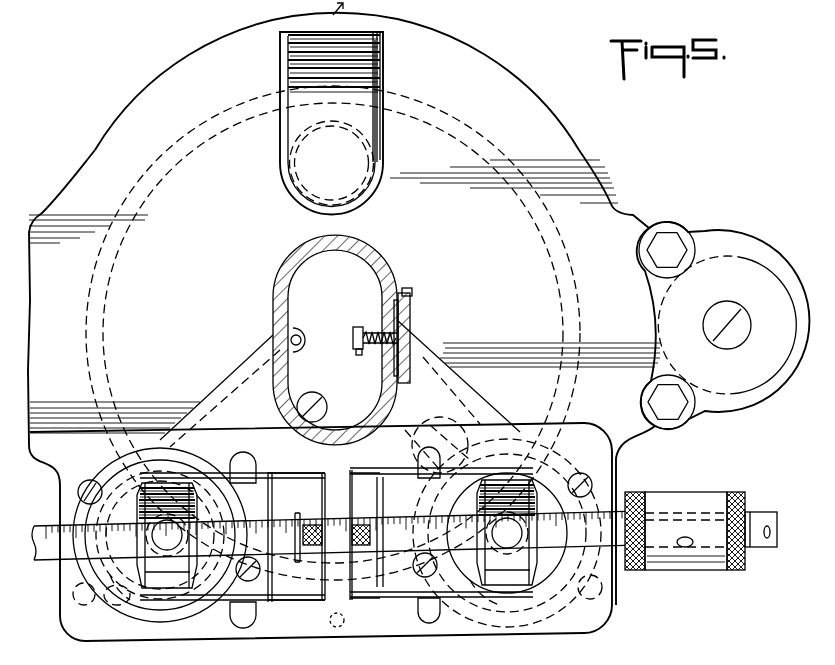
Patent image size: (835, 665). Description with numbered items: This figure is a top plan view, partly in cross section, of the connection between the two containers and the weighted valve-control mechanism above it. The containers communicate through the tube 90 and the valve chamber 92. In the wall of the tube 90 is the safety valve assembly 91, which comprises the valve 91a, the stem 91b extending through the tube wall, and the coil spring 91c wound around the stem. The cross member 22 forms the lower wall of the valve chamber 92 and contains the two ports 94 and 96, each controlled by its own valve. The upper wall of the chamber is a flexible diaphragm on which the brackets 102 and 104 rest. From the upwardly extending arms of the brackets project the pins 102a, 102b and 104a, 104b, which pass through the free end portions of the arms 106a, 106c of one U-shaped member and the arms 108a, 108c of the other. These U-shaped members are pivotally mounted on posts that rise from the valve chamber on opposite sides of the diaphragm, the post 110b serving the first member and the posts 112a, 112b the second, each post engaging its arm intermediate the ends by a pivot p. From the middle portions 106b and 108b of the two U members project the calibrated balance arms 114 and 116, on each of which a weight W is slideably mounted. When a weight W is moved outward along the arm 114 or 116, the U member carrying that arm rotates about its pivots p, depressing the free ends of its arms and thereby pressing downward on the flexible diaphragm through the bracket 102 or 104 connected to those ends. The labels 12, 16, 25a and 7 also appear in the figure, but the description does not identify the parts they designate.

The slot 12 is at (384, 70).
The cross member 22 is at (507, 82).
The section line 16 is at (138, 246).
The boss 25a is at (712, 250).
The tube 90 is at (377, 254).
The safety valve assembly 91 is at (411, 305).
The valve 91a is at (406, 289).
The stem 91b is at (380, 323).
The coil spring 91c is at (368, 352).
The valve chamber 92 is at (430, 366).
The port 96 is at (481, 370).
The port 94 is at (72, 583).
The calibrated balance arm 114 is at (56, 522).
The weight W is at (687, 491).
The calibrated balance arm 116 is at (760, 512).
The bracket 102 is at (154, 535).
The pin 102a is at (208, 470).
The pin 102b is at (132, 635).
The bracket 104 is at (527, 504).
The pin 104a is at (522, 445).
The pin 104b is at (522, 602).
The arm 106a is at (248, 462).
The middle portion 106b is at (303, 472).
The arm 106c is at (238, 622).
The arm 108a is at (481, 446).
The middle portion 108b is at (362, 470).
The arm 108c is at (472, 596).
The post 110b is at (252, 625).
The post 112a is at (436, 440).
The post 112b is at (417, 606).
The pivot p is at (358, 538).
The section line 7 is at (330, 428).